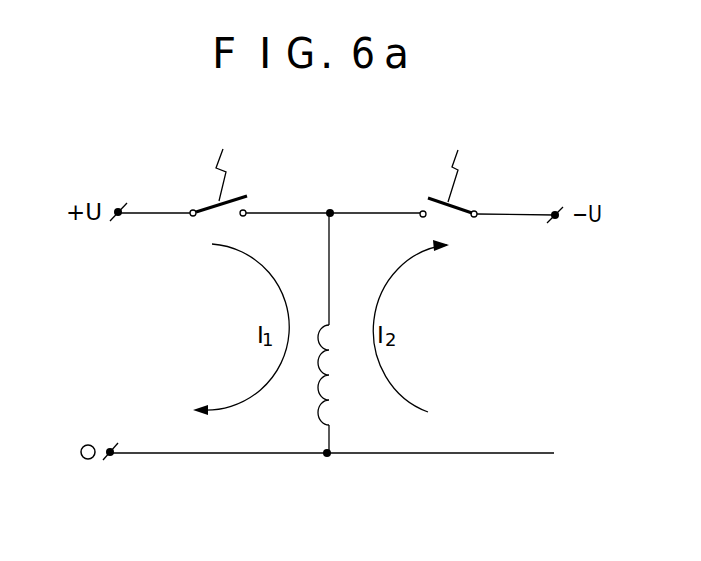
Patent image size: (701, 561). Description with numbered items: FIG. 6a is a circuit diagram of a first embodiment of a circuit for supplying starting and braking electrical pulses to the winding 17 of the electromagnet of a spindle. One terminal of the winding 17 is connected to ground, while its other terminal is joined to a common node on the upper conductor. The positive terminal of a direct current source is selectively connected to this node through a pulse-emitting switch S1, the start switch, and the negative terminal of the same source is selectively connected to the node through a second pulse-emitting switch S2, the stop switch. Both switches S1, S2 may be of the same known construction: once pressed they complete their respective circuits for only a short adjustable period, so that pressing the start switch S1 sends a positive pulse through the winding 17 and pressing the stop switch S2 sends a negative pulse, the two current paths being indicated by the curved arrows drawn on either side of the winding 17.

The winding 17 is at (318, 388).
The pulse-emitting switch (start switch) S1 is at (210, 169).
The pulse-emitting switch (stop switch) S2 is at (464, 170).